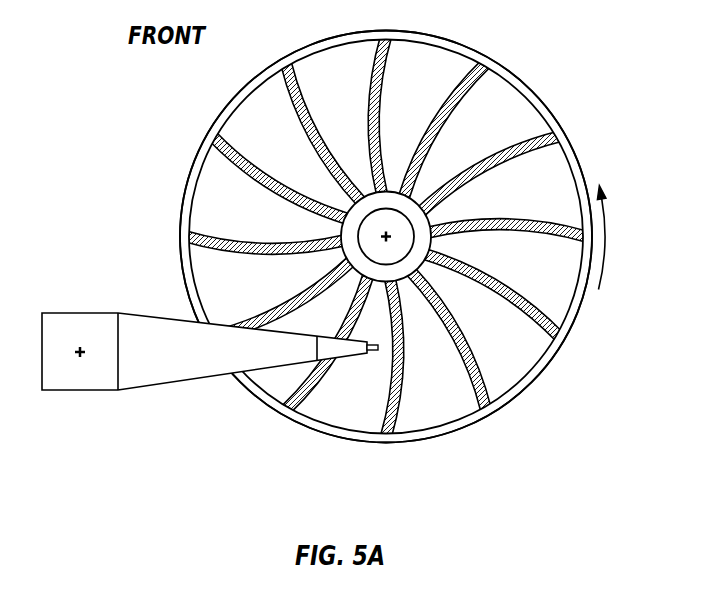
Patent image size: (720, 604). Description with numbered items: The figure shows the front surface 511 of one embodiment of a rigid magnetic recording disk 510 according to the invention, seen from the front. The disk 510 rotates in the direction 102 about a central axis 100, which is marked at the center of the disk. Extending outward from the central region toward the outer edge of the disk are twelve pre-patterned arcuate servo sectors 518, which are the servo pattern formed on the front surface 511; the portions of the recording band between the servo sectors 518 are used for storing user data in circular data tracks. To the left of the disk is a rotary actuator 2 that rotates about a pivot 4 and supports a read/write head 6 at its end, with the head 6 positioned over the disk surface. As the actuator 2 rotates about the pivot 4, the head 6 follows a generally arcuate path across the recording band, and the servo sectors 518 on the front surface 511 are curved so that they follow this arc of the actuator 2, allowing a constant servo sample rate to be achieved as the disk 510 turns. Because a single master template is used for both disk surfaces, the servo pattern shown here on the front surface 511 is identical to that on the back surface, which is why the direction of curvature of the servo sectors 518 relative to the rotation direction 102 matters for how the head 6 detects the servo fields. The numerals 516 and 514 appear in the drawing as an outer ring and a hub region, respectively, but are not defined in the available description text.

The arcuate servo sectors 518 is at (381, 42).
The outer rim / shroud ring 516 is at (427, 43).
The disk 510 is at (561, 124).
The front surface 511 is at (510, 112).
The hub 514 is at (418, 195).
The central axis 100 is at (387, 237).
The direction of rotation 102 is at (605, 216).
The rotary actuator 2 is at (68, 392).
The pivot 4 is at (78, 347).
The read/write head 6 is at (371, 351).